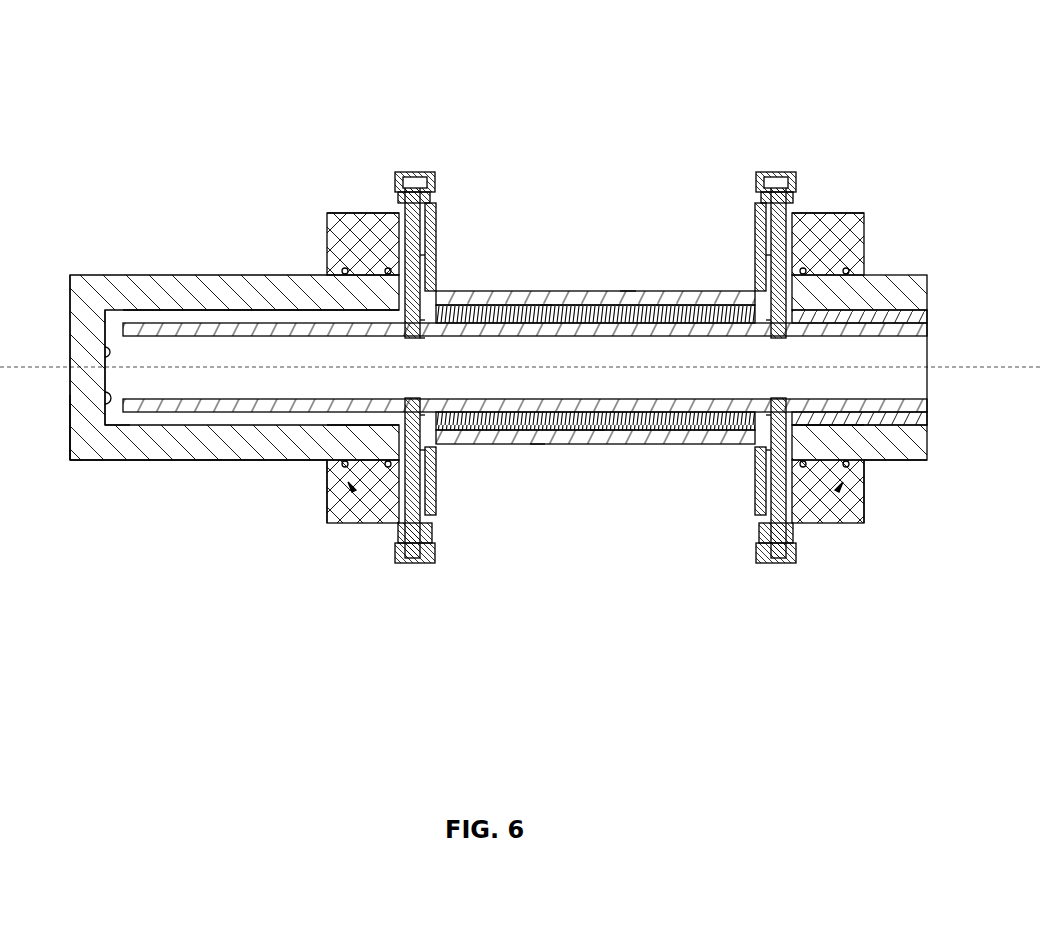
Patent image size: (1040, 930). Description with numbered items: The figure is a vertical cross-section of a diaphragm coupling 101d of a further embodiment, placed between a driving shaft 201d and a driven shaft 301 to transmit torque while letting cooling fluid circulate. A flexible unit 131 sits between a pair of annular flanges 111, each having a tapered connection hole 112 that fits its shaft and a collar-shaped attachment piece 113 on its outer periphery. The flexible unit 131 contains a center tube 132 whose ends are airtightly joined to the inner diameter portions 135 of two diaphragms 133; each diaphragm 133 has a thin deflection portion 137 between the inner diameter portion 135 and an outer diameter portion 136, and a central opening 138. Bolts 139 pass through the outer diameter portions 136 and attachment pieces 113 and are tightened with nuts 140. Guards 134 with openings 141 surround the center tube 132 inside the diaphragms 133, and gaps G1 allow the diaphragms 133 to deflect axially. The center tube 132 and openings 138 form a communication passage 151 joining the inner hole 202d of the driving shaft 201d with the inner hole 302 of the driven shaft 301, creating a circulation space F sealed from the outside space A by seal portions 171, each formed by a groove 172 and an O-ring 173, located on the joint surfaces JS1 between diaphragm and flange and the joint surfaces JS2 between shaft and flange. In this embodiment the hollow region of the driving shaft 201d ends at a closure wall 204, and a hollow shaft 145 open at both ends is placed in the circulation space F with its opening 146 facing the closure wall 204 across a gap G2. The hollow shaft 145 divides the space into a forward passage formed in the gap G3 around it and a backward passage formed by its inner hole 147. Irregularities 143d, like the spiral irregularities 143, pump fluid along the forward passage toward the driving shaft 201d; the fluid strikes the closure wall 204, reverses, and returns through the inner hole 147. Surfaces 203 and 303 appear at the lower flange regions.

The diaphragm coupling 101d is at (740, 92).
The flexible unit 131 is at (623, 140).
The joint surface JS1 is at (397, 188).
The attachment piece 113 is at (396, 208).
The flange 111 is at (337, 213).
The groove 172 is at (330, 258).
The guard 134 is at (437, 232).
The gap G3 is at (545, 291).
The communication passage 151 is at (628, 291).
The circulation space F is at (582, 291).
The deflection portion 137 is at (437, 255).
The hollow shaft 145 is at (152, 315).
The inner hole 147 is at (183, 325).
The driving shaft 201d is at (345, 305).
The driven shaft 301 is at (900, 275).
The O-ring 173 is at (880, 300).
The gap G1 is at (928, 335).
The opening 146 is at (75, 318).
The gap G2 is at (112, 360).
The closure wall 204 is at (75, 398).
The inner hole 202d is at (130, 428).
The opening 138 is at (417, 300).
The joint surface JS2 is at (355, 428).
The opening 141 is at (433, 425).
The inner hole 302 is at (928, 408).
The connection hole 112 is at (285, 462).
The lower flange side surface 203 is at (327, 490).
The right lower flange side surface 303 is at (866, 490).
The inner diameter portion 135 is at (440, 450).
The irregularities 143d is at (597, 447).
The diaphragm 133 is at (438, 488).
The irregularities 143 is at (537, 442).
The seal portion 171 is at (923, 551).
The nut 140 is at (438, 547).
The center tube 132 is at (612, 447).
The bolt 139 is at (392, 548).
The outer diameter portion 136 is at (413, 565).
The outside space A is at (603, 635).